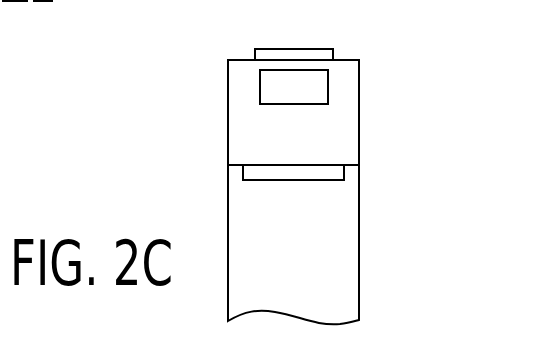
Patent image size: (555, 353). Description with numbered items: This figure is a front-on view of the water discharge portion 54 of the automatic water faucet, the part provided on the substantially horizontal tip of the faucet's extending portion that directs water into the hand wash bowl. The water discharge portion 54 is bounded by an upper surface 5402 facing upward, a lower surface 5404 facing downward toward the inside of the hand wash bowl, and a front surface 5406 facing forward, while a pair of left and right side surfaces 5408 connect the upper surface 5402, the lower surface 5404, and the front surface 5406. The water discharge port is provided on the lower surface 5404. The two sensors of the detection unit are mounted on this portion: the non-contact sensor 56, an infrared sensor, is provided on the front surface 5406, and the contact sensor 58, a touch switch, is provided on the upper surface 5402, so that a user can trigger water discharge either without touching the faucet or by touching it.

The water discharge portion 54 is at (350, 85).
The upper surface 5402 is at (350, 60).
The front surface 5406 is at (338, 122).
The side surfaces 5408 is at (227, 133).
The lower surface 5404 is at (308, 166).
The contact sensor 58 is at (295, 47).
The non-contact sensor 56 is at (260, 88).